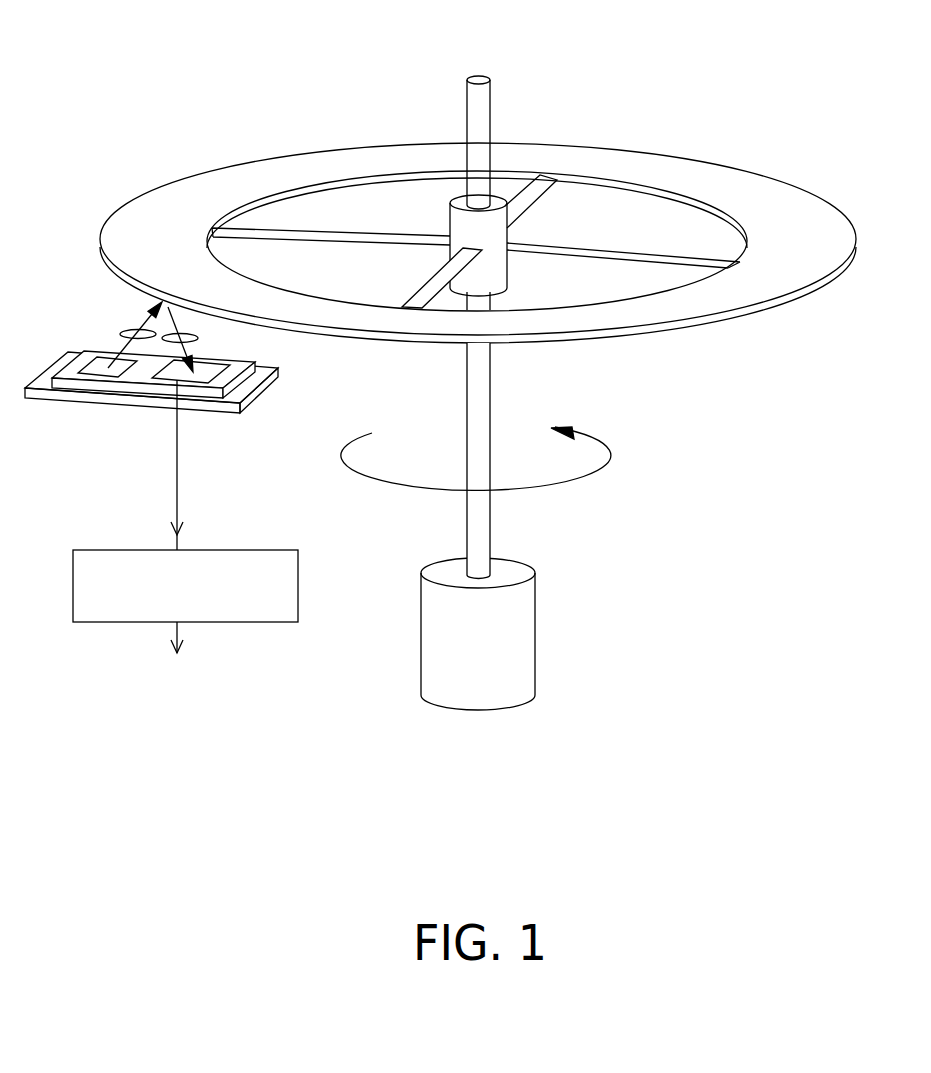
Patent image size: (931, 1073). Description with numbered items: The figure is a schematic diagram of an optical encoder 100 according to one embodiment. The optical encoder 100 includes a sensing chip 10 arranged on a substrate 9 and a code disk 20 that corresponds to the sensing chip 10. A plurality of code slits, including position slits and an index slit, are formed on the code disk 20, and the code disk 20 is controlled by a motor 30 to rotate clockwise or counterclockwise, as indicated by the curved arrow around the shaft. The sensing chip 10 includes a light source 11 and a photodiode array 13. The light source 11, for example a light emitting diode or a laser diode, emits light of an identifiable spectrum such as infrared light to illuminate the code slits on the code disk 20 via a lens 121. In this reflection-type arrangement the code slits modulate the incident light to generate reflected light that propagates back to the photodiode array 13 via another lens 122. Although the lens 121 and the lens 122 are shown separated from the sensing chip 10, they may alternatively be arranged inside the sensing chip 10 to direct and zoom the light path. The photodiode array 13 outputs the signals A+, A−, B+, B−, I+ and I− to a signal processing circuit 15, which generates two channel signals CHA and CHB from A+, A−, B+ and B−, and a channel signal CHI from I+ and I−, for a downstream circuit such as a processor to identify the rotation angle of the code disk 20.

The optical encoder 100 is at (97, 40).
The code disk 20 is at (793, 210).
The motor 30 is at (523, 635).
The substrate 9 is at (110, 403).
The sensing chip 10 is at (63, 384).
The light source 11 is at (106, 364).
The photodiode array 13 is at (222, 374).
The lens 121 is at (123, 333).
The lens 122 is at (198, 338).
The signal processing circuit 15 is at (298, 570).